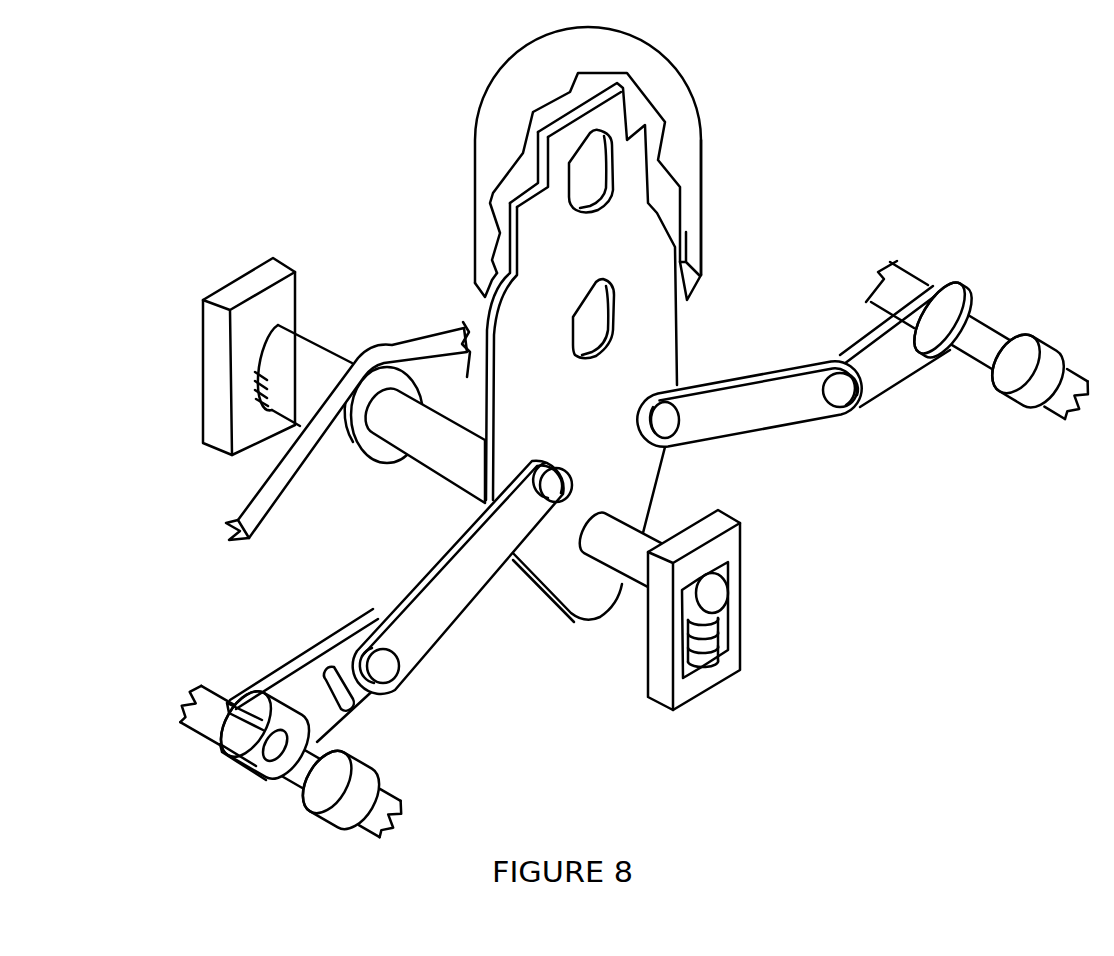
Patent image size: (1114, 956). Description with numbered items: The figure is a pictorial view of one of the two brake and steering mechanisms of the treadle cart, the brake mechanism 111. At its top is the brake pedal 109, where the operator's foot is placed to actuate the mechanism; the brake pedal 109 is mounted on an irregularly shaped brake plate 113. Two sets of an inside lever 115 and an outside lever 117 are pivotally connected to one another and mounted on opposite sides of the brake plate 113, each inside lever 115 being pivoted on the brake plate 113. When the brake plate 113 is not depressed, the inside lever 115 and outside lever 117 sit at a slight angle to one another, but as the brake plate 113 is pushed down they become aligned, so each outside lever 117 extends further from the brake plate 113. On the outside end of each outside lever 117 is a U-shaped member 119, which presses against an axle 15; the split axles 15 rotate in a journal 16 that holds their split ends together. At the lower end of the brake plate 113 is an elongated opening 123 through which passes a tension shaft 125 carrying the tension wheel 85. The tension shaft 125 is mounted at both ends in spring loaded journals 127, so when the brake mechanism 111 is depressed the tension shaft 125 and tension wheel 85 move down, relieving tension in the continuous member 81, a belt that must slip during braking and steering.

The brake pedal 109 is at (491, 85).
The brake mechanism 111 is at (701, 155).
The brake plate 113 is at (653, 275).
The inside lever 115 is at (760, 393).
The outside lever 117 is at (910, 357).
The U-shaped member 119 is at (247, 692).
The axle 15 is at (293, 787).
The journal 16 is at (348, 768).
The continuous member 81 is at (250, 497).
The tension wheel 85 is at (380, 460).
The elongated opening 123 is at (598, 573).
The tension shaft 125 is at (450, 483).
The spring loaded journal 127 is at (742, 545).